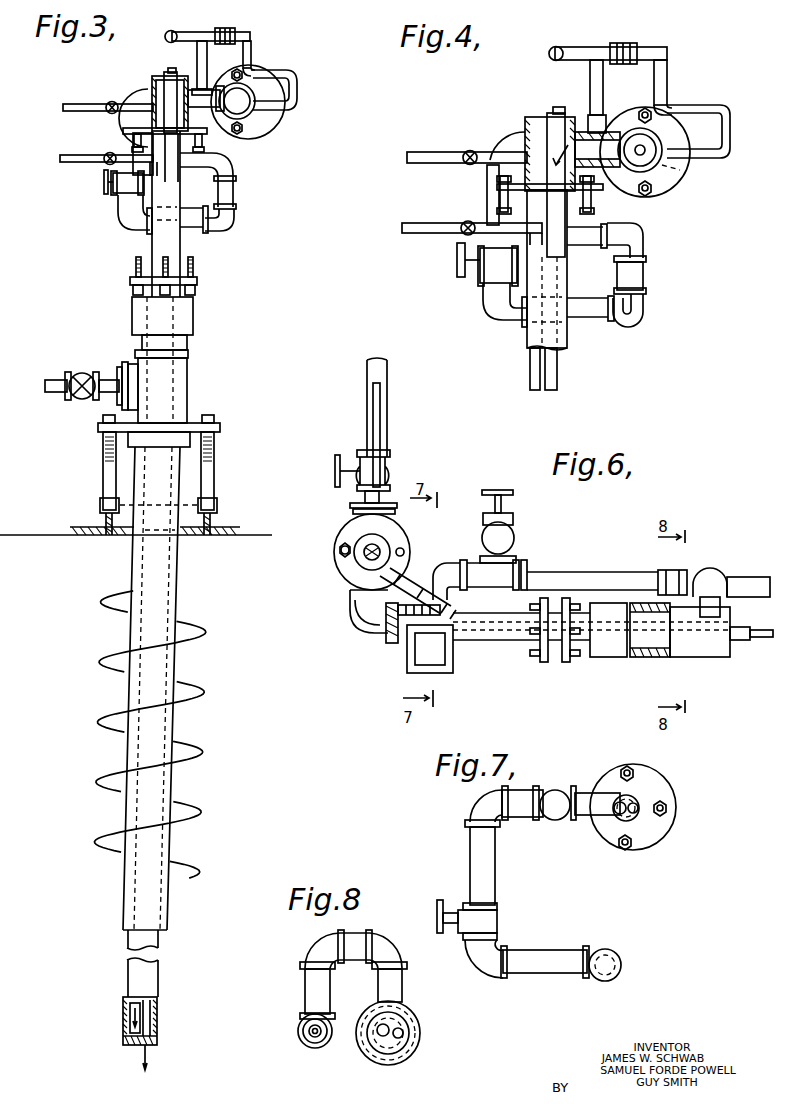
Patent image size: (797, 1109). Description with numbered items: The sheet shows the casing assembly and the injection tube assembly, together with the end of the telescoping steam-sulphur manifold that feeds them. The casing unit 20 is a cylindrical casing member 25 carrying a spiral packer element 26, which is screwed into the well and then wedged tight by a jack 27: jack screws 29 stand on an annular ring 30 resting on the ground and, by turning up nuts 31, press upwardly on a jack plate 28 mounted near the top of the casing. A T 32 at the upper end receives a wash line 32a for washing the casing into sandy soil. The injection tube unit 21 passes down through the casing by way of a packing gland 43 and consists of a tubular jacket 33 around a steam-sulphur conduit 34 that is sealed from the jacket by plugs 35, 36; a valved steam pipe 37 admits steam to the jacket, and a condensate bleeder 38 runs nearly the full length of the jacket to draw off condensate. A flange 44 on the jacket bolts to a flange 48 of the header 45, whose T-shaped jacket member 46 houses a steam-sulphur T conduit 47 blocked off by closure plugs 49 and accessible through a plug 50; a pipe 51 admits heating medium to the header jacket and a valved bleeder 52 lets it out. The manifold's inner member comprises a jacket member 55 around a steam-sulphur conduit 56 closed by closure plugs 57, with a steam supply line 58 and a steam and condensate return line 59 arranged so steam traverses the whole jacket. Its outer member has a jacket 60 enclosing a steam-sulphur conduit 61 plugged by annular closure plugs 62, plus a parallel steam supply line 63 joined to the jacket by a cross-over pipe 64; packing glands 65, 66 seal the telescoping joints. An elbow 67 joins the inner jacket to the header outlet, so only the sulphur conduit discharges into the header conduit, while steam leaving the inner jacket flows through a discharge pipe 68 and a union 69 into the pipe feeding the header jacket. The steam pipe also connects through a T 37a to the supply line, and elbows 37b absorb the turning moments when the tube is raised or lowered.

In FIG. 3, the casing unit 20 is at (128, 695).
In FIG. 3, the injection tube unit 21 is at (140, 560).
In FIG. 3, the cylindrical casing member 25 is at (178, 578).
In FIG. 3, the spiral packer element 26 is at (190, 690).
In FIG. 3, the jack 27 is at (214, 450).
In FIG. 3, the jack plate 28 is at (198, 423).
In FIG. 3, the jack screws 29 is at (103, 467).
In FIG. 3, the annular ring 30 is at (100, 516).
In FIG. 3, the nuts 31 is at (100, 437).
In FIG. 3, the T 32 is at (187, 382).
In FIG. 3, the wash line 32a is at (58, 398).
In FIG. 6, the wash line 32a is at (387, 402).
In FIG. 3, the tubular jacket 33 is at (152, 243).
In FIG. 4, the tubular jacket 33 is at (570, 342).
In FIG. 3, the steam-sulphur conduit 34 is at (174, 172).
In FIG. 4, the steam-sulphur conduit 34 is at (557, 378).
In FIG. 3, the plug 35 is at (130, 152).
In FIG. 4, the plug 35 is at (497, 222).
In FIG. 3, the plug 36 is at (128, 1046).
In FIG. 3, the valved steam pipe 37 is at (233, 183).
In FIG. 4, the valved steam pipe 37 is at (487, 186).
In FIG. 6, the valved steam pipe 37 is at (490, 552).
In FIG. 7, the valved steam pipe 37 is at (475, 871).
In FIG. 6, the T 37a is at (535, 570).
In FIG. 3, the elbows 37b is at (236, 216).
In FIG. 4, the elbows 37b is at (643, 257).
In FIG. 7, the elbows 37b is at (490, 980).
In FIG. 3, the condensate bleeder 38 is at (103, 170).
In FIG. 4, the condensate bleeder 38 is at (440, 236).
In FIG. 3, the packing gland 43 is at (193, 316).
In FIG. 3, the flange 44 is at (204, 138).
In FIG. 4, the flange 44 is at (600, 206).
In FIG. 3, the header 45 is at (158, 76).
In FIG. 3, the jacket member 46 is at (152, 88).
In FIG. 4, the jacket member 46 is at (576, 117).
In FIG. 6, the jacket member 46 is at (362, 560).
In FIG. 3, the steam-sulphur T conduit 47 is at (176, 82).
In FIG. 3, the flange 48 is at (123, 124).
In FIG. 4, the flange 48 is at (640, 200).
In FIG. 6, the flange 48 is at (340, 538).
In FIG. 3, the closure plugs 49 is at (132, 93).
In FIG. 4, the closure plugs 49 is at (505, 140).
In FIG. 3, the plug 50 is at (170, 68).
In FIG. 4, the plug 50 is at (556, 108).
In FIG. 6, the plug 50 is at (366, 558).
In FIG. 3, the pipe 51 is at (207, 62).
In FIG. 4, the pipe 51 is at (603, 82).
In FIG. 6, the pipe 51 is at (360, 592).
In FIG. 3, the valved bleeder 52 is at (82, 104).
In FIG. 6, the valved bleeder 52 is at (380, 436).
In FIG. 6, the jacket member 55 is at (466, 640).
In FIG. 7, the jacket member 55 is at (636, 818).
In FIG. 8, the jacket member 55 is at (404, 1036).
In FIG. 4, the steam-sulphur conduit 56 is at (665, 190).
In FIG. 6, the steam-sulphur conduit 56 is at (404, 668).
In FIG. 7, the steam-sulphur conduit 56 is at (620, 822).
In FIG. 8, the steam-sulphur conduit 56 is at (382, 1048).
In FIG. 4, the closure plugs 57 is at (660, 142).
In FIG. 6, the closure plugs 57 is at (393, 643).
In FIG. 6, the steam supply line 58 is at (445, 566).
In FIG. 7, the steam supply line 58 is at (585, 810).
In FIG. 8, the steam supply line 58 is at (316, 1040).
In FIG. 4, the steam and condensate return line 59 is at (680, 170).
In FIG. 6, the steam and condensate return line 59 is at (760, 660).
In FIG. 7, the steam and condensate return line 59 is at (640, 808).
In FIG. 8, the steam and condensate return line 59 is at (405, 1040).
In FIG. 6, the jacket 60 is at (722, 657).
In FIG. 8, the jacket 60 is at (412, 1012).
In FIG. 6, the steam-sulphur conduit 61 is at (668, 657).
In FIG. 8, the steam-sulphur conduit 61 is at (418, 1020).
In FIG. 6, the annular closure plugs 62 is at (627, 657).
In FIG. 6, the steam supply line 63 is at (742, 577).
In FIG. 8, the steam supply line 63 is at (302, 1040).
In FIG. 6, the cross-over pipe 64 is at (722, 607).
In FIG. 8, the cross-over pipe 64 is at (353, 974).
In FIG. 4, the packing gland 65 is at (690, 185).
In FIG. 6, the packing gland 65 is at (578, 662).
In FIG. 7, the packing gland 65 is at (665, 781).
In FIG. 6, the packing gland 66 is at (668, 572).
In FIG. 3, the elbow 67 is at (256, 104).
In FIG. 4, the elbow 67 is at (632, 130).
In FIG. 6, the elbow 67 is at (362, 615).
In FIG. 3, the discharge pipe 68 is at (279, 71).
In FIG. 4, the discharge pipe 68 is at (690, 105).
In FIG. 6, the discharge pipe 68 is at (455, 670).
In FIG. 3, the union 69 is at (227, 30).
In FIG. 4, the union 69 is at (622, 43).
In FIG. 6, the union 69 is at (415, 585).